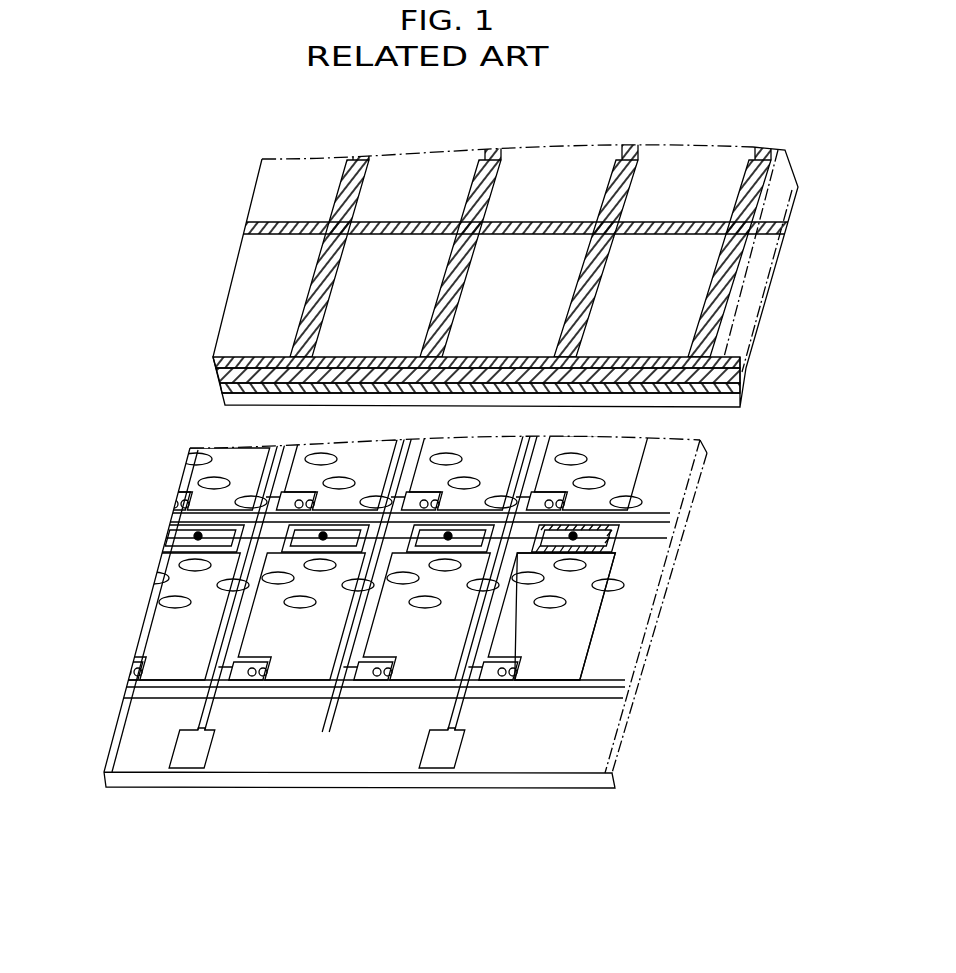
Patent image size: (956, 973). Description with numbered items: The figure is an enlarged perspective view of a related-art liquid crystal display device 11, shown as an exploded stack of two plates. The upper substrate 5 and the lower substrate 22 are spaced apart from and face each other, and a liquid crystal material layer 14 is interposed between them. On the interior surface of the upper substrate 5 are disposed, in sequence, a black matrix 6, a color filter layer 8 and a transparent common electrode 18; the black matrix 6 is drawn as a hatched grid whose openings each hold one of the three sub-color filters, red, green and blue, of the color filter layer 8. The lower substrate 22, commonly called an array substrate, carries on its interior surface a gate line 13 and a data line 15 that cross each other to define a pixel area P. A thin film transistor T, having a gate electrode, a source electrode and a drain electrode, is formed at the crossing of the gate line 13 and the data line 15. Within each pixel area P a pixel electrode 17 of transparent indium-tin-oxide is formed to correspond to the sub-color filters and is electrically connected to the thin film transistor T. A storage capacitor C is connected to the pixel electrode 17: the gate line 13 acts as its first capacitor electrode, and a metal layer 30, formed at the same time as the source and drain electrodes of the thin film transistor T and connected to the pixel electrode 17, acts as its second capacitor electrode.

The LCD device 11 is at (115, 322).
The upper substrate 5 is at (195, 309).
The color filter layer 8 is at (722, 192).
The black matrix 6 is at (776, 233).
The transparent common electrode 18 is at (745, 405).
The lower substrate 22 is at (150, 503).
The liquid crystal material layer 14 is at (628, 496).
The pixel electrode 17 is at (587, 660).
The pixel area P is at (628, 620).
The gate line 13 is at (587, 698).
The thin film transistor T is at (512, 690).
The metal layer 30 is at (620, 533).
The storage capacitor C is at (618, 555).
The data line 15 is at (437, 728).